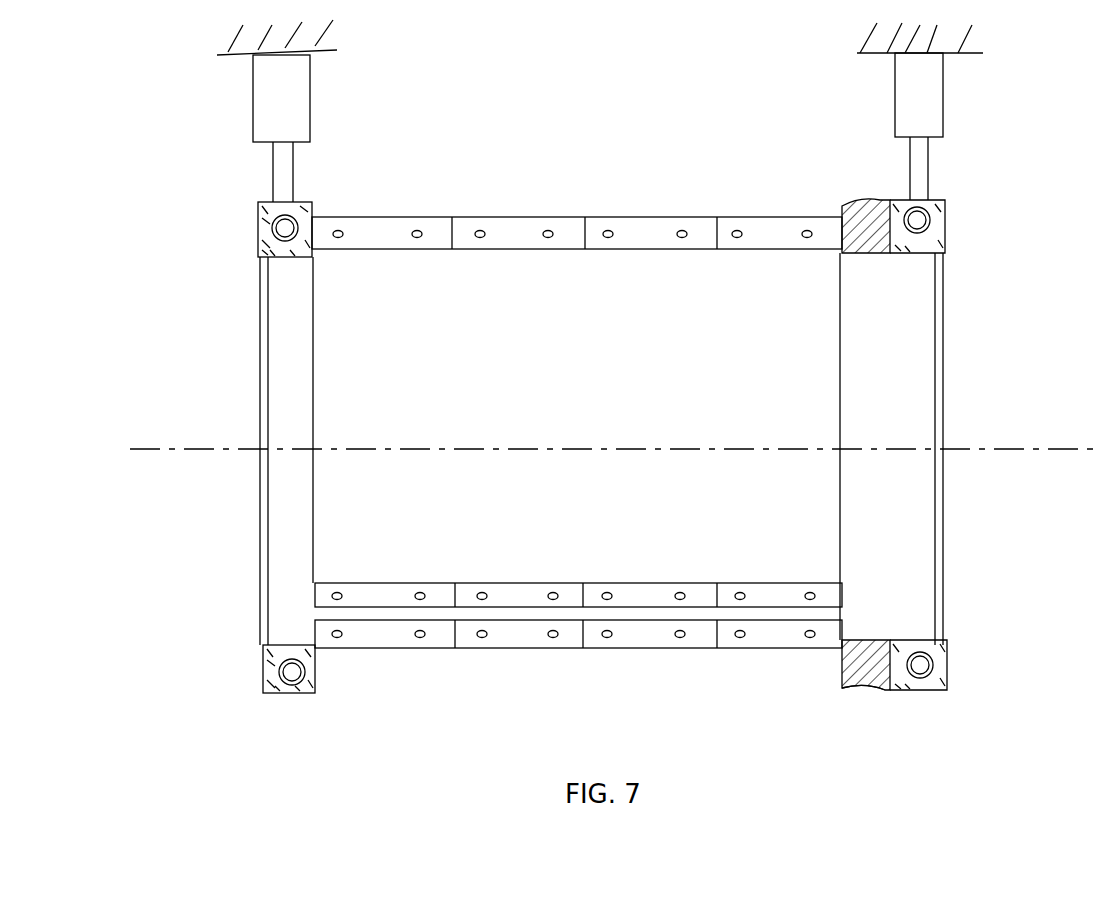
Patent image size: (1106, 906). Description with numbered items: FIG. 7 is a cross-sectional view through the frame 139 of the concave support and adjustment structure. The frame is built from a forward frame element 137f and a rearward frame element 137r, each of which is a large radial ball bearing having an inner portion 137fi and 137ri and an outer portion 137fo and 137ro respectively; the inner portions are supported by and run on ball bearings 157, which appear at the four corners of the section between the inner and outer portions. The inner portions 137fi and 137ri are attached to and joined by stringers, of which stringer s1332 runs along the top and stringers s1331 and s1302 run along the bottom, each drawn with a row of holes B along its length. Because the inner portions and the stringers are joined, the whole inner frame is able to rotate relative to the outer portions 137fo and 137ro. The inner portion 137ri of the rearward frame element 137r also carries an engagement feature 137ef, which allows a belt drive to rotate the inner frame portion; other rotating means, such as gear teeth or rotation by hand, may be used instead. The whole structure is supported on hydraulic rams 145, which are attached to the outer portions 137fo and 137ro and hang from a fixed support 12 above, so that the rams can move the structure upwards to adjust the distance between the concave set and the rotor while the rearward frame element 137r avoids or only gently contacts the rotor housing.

The fixed support 12 is at (343, 32).
The hydraulic ram 145 is at (287, 105).
The outer portion of forward frame element 137fo is at (258, 212).
The ball bearings 157 is at (288, 230).
The stringer s1332 is at (637, 217).
The outer portion of rearward frame element 137ro is at (945, 222).
The inner portion of forward frame element 137fi is at (290, 262).
The slat holes B is at (682, 242).
The inner portion of rearward frame element 137ri is at (873, 257).
The frame 139 is at (1017, 325).
The stringer s1331 is at (650, 583).
The stringer s1302 is at (650, 648).
The rearward frame element 137r is at (957, 640).
The engagement feature 137ef is at (865, 692).
The forward frame element 137f is at (300, 713).